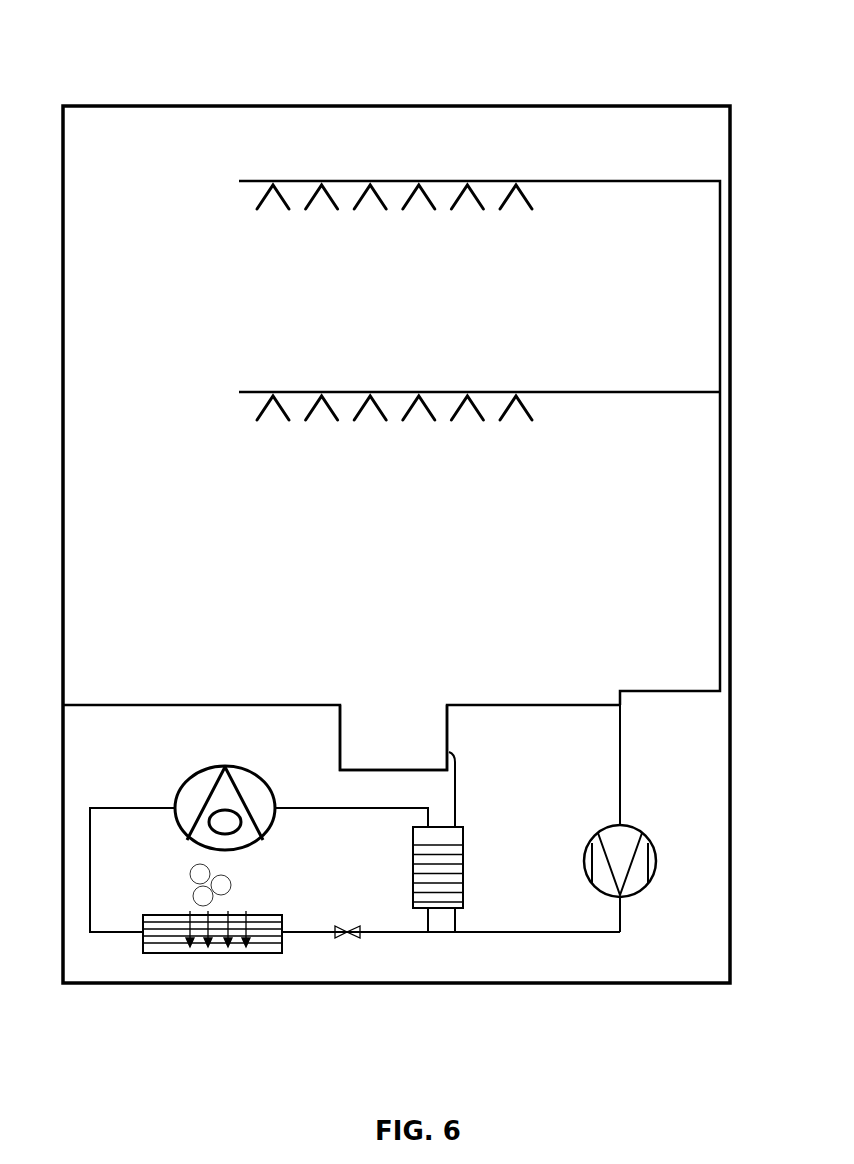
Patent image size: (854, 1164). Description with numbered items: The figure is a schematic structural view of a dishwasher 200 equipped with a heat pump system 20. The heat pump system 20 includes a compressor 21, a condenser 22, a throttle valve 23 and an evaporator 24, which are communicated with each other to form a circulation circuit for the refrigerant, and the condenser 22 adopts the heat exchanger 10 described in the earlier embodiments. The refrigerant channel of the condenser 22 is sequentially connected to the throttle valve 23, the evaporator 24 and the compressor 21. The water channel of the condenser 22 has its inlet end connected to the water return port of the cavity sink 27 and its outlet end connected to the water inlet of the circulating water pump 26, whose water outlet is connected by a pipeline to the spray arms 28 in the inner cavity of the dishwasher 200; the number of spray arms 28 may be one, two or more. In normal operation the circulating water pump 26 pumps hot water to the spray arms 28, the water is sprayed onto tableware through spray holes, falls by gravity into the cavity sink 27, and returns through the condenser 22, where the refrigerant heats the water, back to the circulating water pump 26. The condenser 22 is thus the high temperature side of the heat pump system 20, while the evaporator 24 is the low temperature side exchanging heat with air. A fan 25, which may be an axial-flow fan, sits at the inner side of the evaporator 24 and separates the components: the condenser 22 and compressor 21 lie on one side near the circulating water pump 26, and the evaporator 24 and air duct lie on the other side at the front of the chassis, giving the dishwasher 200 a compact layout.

The dishwasher 200 is at (386, 44).
The spray arm 28 is at (505, 207).
The cavity sink 27 is at (372, 727).
The compressor 21 is at (205, 788).
The fan 25 is at (232, 880).
The evaporator 24 is at (232, 955).
The throttle valve 23 is at (347, 940).
The condenser 22 is at (516, 901).
The heat exchanger 10 is at (443, 911).
The circulating water pump 26 is at (628, 893).
The heat pump system 20 is at (176, 990).